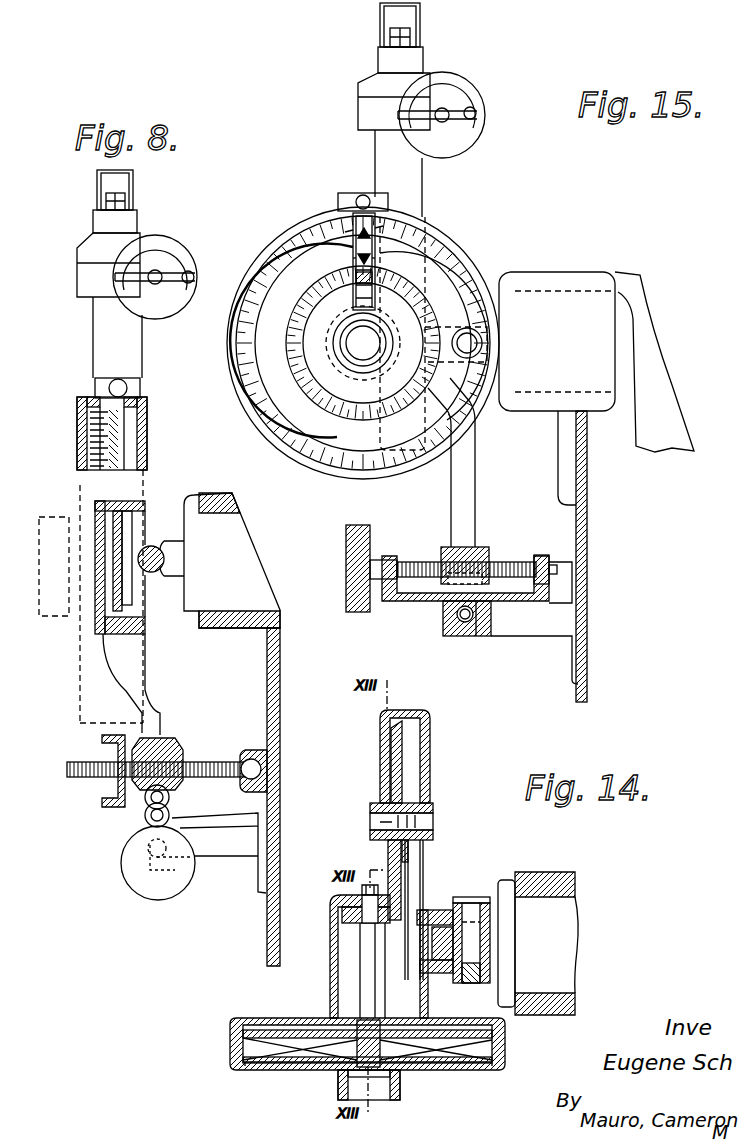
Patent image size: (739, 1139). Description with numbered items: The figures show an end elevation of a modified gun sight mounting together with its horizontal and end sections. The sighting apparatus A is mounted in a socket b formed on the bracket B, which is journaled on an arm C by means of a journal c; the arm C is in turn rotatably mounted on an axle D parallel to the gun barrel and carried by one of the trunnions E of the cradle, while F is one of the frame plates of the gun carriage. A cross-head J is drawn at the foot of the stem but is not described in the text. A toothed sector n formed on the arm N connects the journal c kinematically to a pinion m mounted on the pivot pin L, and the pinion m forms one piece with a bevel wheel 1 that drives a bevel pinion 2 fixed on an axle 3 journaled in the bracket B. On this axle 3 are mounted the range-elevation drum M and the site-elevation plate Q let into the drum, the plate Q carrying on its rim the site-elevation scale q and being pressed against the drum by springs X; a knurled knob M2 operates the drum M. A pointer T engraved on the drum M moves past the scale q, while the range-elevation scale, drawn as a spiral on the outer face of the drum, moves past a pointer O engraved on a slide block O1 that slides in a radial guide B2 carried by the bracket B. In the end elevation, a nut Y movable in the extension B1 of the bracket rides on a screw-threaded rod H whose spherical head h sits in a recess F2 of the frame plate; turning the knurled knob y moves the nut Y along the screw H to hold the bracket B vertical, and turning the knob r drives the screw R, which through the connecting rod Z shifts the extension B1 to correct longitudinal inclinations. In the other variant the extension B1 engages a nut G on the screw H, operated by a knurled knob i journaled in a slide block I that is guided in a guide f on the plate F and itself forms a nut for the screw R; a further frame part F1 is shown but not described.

In FIG. 8, the sighting apparatus A is at (105, 220).
In FIG. 15, the sighting apparatus A is at (370, 107).
In FIG. 8, the socket b is at (105, 318).
In FIG. 15, the socket b is at (410, 189).
In FIG. 8, the bracket B is at (147, 436).
In FIG. 15, the bracket B is at (270, 256).
In FIG. 8, the pointer O is at (108, 397).
In FIG. 15, the pointer O is at (377, 258).
In FIG. 8, the cross head J is at (135, 389).
In FIG. 15, the cross head J is at (348, 194).
In FIG. 8, the range-elevation drum M is at (98, 434).
In FIG. 15, the range-elevation drum M is at (363, 447).
In FIG. 14, the range-elevation drum M is at (296, 1064).
In FIG. 8, the trunnion E is at (214, 505).
In FIG. 15, the trunnion E is at (578, 291).
In FIG. 14, the trunnion E is at (560, 941).
In FIG. 8, the journal c is at (95, 522).
In FIG. 14, the journal c is at (418, 962).
In FIG. 8, the arm C is at (146, 545).
In FIG. 8, the axle D is at (150, 578).
In FIG. 15, the axle D is at (472, 330).
In FIG. 14, the axle D is at (470, 908).
In FIG. 8, the knurled knob M2 is at (50, 618).
In FIG. 15, the knurled knob M2 is at (402, 333).
In FIG. 14, the knurled knob M2 is at (400, 1088).
In FIG. 8, the extension B1 is at (130, 670).
In FIG. 15, the extension B1 is at (467, 486).
In FIG. 8, the knurled knob y is at (100, 749).
In FIG. 8, the nut Y is at (175, 752).
In FIG. 8, the screw-threaded rod H is at (214, 768).
In FIG. 15, the screw-threaded rod H is at (427, 562).
In FIG. 8, the recess F2 is at (272, 752).
In FIG. 8, the spherical head h is at (258, 770).
In FIG. 8, the screw R is at (170, 816).
In FIG. 15, the screw R is at (459, 636).
In FIG. 8, the connecting rod Z is at (146, 803).
In FIG. 8, the knurled knob r is at (140, 878).
In FIG. 8, the plate F1 is at (275, 885).
In FIG. 15, the pointer T is at (381, 228).
In FIG. 15, the radial guide B2 is at (353, 237).
In FIG. 15, the slide block O1 is at (352, 258).
In FIG. 15, the axle 3 is at (368, 346).
In FIG. 14, the axle 3 is at (365, 964).
In FIG. 15, the site-elevation scale q is at (242, 332).
In FIG. 14, the site-elevation scale q is at (245, 1068).
In FIG. 15, the nut G is at (479, 556).
In FIG. 15, the knurled knob i is at (350, 572).
In FIG. 15, the slide block I is at (421, 601).
In FIG. 15, the guide f is at (483, 636).
In FIG. 15, the frame plate F is at (587, 537).
In FIG. 14, the bevel wheel 1 is at (396, 756).
In FIG. 14, the pinion m is at (432, 795).
In FIG. 14, the pivot pin L is at (393, 822).
In FIG. 14, the toothed sector n is at (418, 849).
In FIG. 14, the arm N is at (411, 887).
In FIG. 14, the bevel pinion 2 is at (342, 913).
In FIG. 14, the site-elevation plate Q is at (273, 1032).
In FIG. 14, the springs X is at (320, 1032).